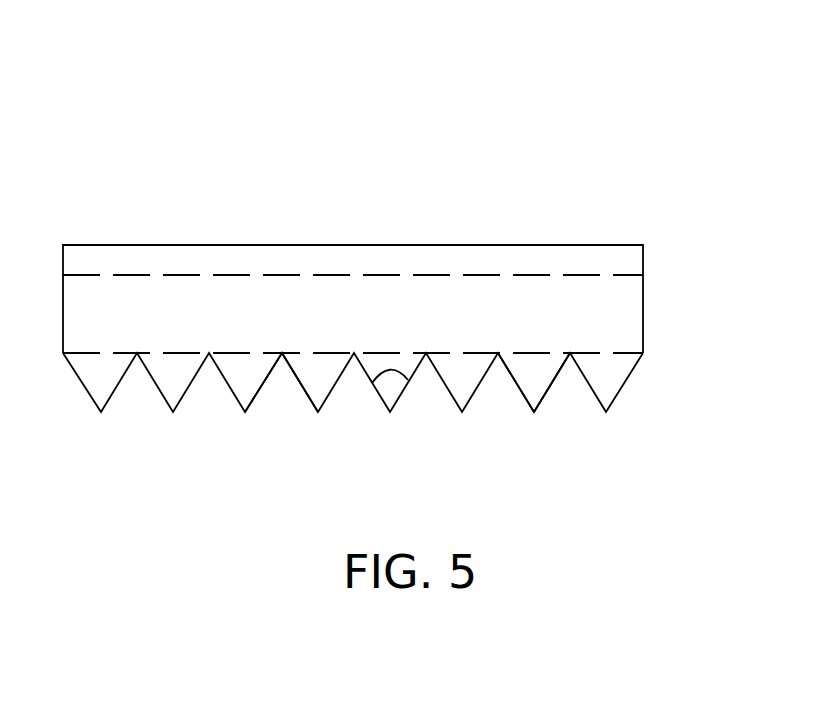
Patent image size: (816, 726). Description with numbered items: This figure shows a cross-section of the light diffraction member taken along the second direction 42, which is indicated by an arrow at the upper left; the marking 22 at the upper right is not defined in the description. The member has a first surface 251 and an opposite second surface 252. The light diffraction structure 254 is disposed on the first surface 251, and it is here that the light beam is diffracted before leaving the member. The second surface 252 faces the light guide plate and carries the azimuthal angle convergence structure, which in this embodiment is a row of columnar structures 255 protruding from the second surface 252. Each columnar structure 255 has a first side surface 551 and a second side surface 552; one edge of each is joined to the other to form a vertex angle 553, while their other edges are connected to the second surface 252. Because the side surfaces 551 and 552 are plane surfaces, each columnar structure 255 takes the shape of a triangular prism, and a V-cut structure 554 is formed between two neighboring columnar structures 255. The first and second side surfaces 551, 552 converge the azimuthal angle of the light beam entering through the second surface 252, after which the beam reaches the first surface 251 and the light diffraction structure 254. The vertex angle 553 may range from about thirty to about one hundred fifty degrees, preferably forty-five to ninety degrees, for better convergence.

The second direction 42 is at (65, 117).
The light guide plate 22 is at (655, 123).
The light diffraction structure 254 is at (643, 245).
The first surface 251 is at (643, 274).
The second surface 252 is at (643, 353).
The columnar structures 255 is at (613, 383).
The V-cut structure 554 is at (280, 383).
The vertex angle 553 is at (392, 395).
The first side surface 551 is at (513, 383).
The second side surface 552 is at (555, 383).